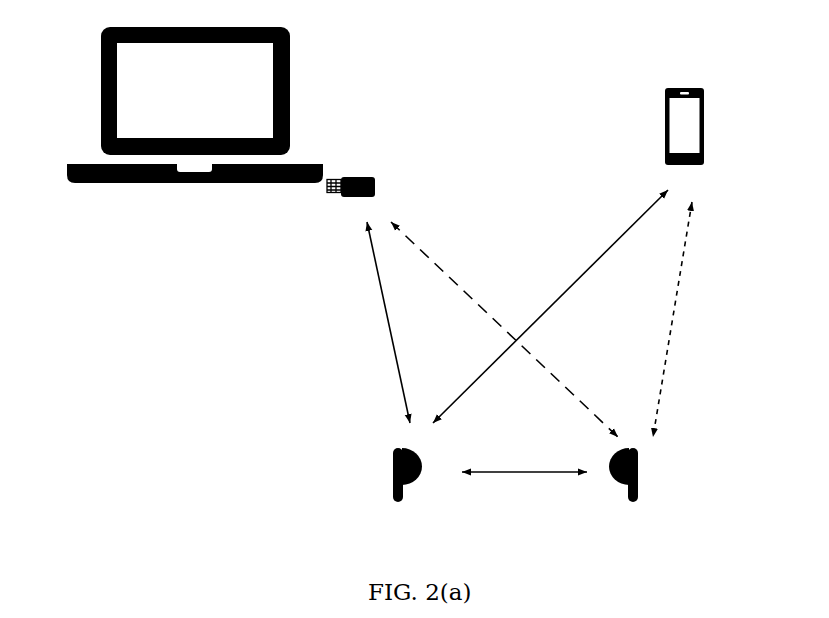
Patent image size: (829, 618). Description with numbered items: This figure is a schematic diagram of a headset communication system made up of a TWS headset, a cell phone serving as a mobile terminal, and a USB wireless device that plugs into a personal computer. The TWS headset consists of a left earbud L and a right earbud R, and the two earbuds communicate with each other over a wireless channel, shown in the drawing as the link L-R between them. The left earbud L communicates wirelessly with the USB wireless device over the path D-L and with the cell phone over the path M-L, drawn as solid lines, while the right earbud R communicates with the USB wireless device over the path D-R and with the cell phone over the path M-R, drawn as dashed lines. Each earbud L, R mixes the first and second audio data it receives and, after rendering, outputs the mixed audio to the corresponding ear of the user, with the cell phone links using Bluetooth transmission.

The left earbud L is at (407, 504).
The right earbud R is at (623, 504).
The distance between dongle and left speaker D-L is at (375, 322).
The distance between dongle and right speaker D-R is at (504, 329).
The distance between mobile phone and left speaker M-L is at (550, 306).
The distance between mobile phone and right speaker M-R is at (689, 319).
The distance between left and right speakers L-R is at (524, 491).